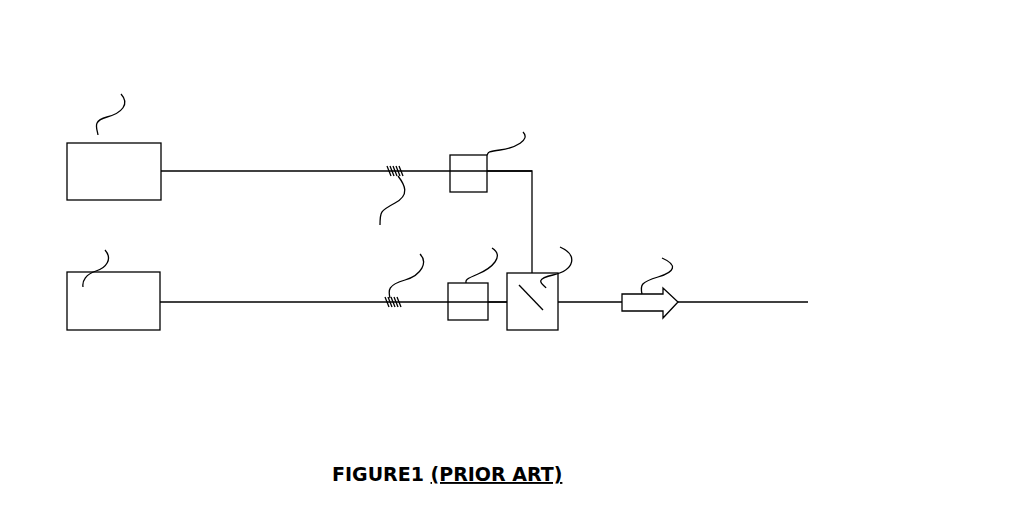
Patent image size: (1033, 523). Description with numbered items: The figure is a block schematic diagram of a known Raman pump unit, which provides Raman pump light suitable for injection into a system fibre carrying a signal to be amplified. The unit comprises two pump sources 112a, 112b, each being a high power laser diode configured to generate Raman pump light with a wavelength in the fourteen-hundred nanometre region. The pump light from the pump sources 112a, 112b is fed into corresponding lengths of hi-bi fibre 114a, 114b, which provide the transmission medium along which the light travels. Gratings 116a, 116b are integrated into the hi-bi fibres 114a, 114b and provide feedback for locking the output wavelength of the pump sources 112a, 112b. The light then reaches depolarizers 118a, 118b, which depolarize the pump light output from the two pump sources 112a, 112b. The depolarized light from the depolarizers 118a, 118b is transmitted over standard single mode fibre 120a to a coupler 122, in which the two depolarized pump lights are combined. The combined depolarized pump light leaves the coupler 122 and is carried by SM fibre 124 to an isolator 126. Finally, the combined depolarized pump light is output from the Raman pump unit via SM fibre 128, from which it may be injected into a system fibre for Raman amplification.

The pump source 112a is at (83, 137).
The pump source 112b is at (80, 330).
The hi-bi fibre 114a is at (192, 167).
The hi-bi fibre 114b is at (263, 302).
The grating 116a is at (393, 160).
The grating 116b is at (395, 306).
The depolarizer 118a is at (457, 155).
The depolarizer 118b is at (477, 322).
The single mode fibre 120a is at (535, 175).
The coupler 122 is at (540, 332).
The SM fibre 124 is at (592, 300).
The isolator 126 is at (672, 315).
The SM fibre 128 is at (752, 302).